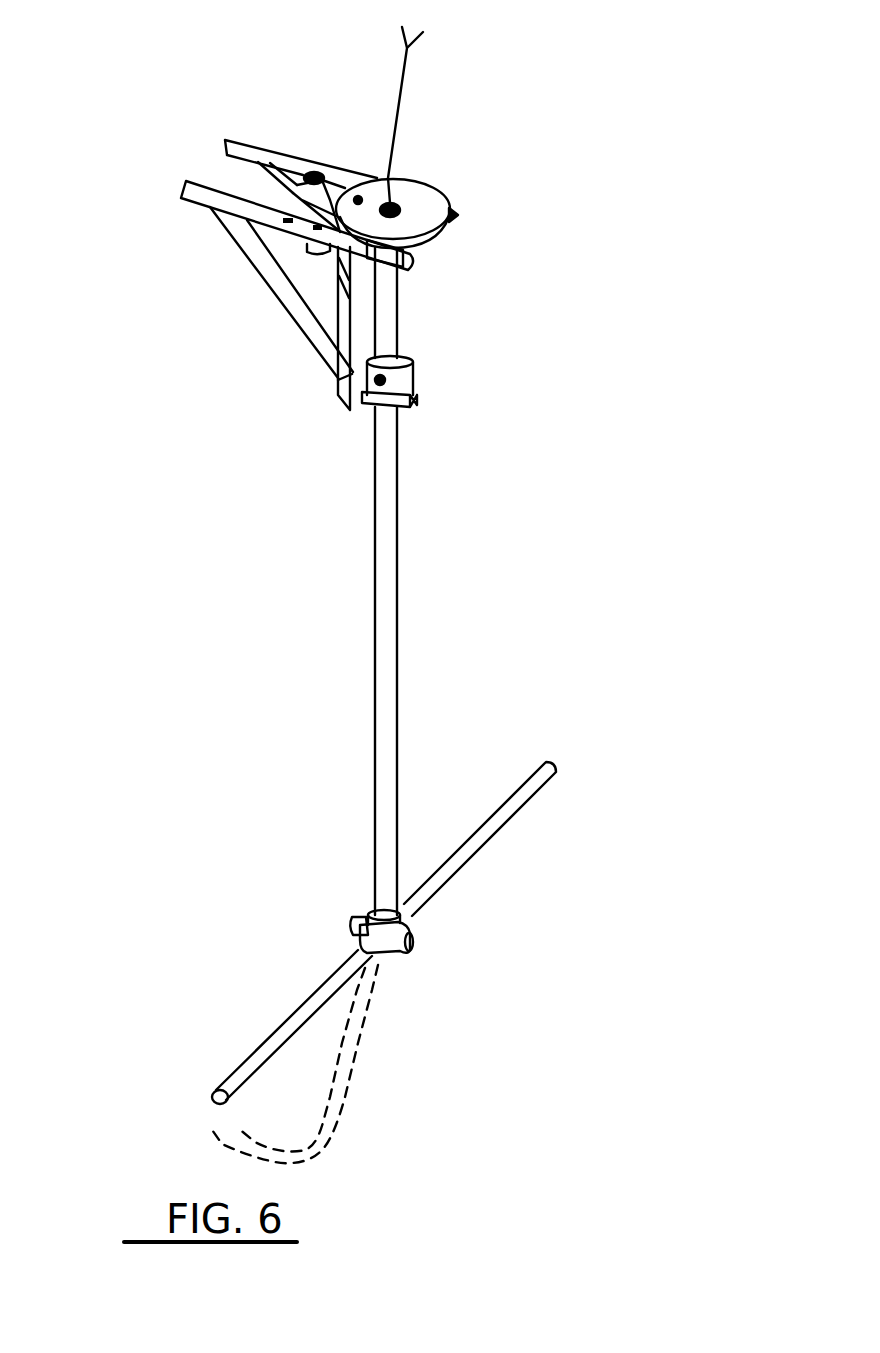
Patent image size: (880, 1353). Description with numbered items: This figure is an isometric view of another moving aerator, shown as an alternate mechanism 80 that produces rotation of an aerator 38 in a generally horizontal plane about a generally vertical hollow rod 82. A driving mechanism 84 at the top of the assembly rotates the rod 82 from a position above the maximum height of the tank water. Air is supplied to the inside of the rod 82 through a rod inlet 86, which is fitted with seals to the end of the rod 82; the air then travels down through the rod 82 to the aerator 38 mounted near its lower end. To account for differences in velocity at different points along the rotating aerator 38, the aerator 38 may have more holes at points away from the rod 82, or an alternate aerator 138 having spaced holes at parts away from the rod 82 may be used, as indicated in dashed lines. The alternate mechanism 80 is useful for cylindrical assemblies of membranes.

The alternate mechanism 80 is at (170, 630).
The hollow rod 82 is at (390, 632).
The driving mechanism 84 is at (533, 133).
The rod inlet 86 is at (397, 203).
The aerator 38 is at (492, 843).
The alternate aerator 138 is at (350, 1093).